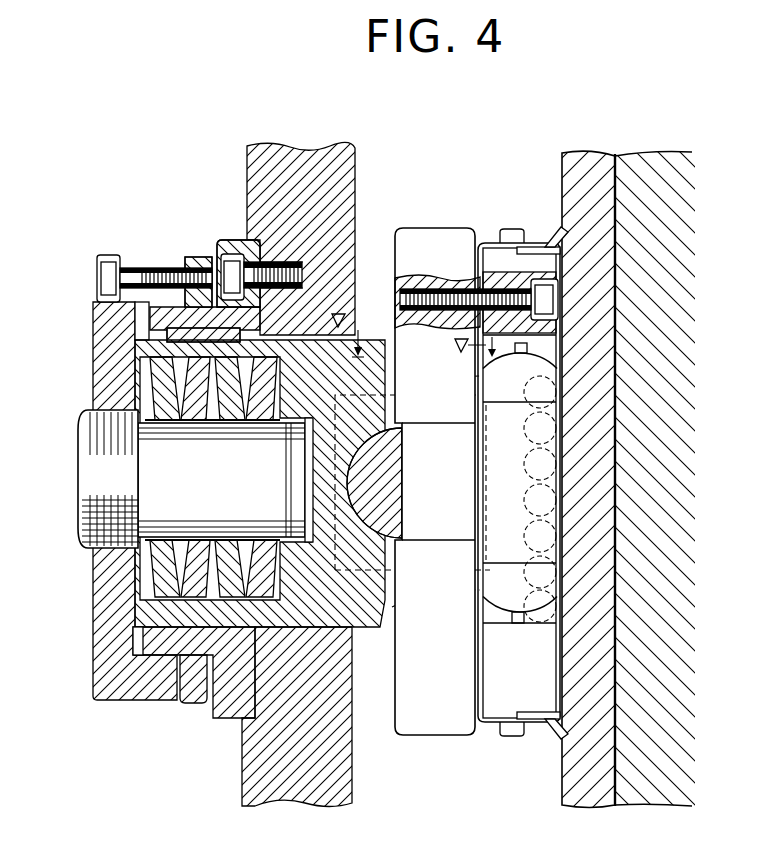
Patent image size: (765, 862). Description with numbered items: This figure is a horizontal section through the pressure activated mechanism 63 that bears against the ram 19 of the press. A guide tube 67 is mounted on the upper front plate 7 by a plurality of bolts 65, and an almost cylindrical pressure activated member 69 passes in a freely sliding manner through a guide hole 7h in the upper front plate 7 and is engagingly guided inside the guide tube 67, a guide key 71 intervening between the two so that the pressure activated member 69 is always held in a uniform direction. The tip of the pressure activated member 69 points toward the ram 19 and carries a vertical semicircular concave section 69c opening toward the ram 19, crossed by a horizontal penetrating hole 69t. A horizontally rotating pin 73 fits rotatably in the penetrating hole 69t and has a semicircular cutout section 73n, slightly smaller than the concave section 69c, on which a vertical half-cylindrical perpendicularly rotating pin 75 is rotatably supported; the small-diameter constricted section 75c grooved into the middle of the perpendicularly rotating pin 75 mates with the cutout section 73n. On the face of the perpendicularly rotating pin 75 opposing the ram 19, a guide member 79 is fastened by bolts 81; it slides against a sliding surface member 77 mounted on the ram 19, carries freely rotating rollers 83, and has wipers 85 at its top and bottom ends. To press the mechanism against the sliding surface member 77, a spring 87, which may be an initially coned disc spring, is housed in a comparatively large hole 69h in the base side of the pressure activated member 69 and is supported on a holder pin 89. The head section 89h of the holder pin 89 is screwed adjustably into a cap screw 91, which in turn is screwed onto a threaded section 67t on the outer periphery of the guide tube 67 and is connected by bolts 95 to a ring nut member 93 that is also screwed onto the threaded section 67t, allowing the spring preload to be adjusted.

The upper front plate 7 is at (348, 226).
The guide hole 7h is at (318, 318).
The ram 19 is at (656, 796).
The pressure activated mechanism 63 is at (101, 241).
The bolts 65 is at (292, 262).
The guide tube 67 is at (228, 710).
The threaded section 67t is at (127, 678).
The pressure activated member 69 is at (328, 384).
The concave section 69c is at (358, 330).
The hole 69h is at (148, 589).
The penetrating hole 69t is at (382, 395).
The guide key 71 is at (262, 333).
The horizontally rotating pin 73 is at (377, 523).
The cutout section 73n is at (397, 460).
The perpendicularly rotating pin 75 is at (446, 689).
The constricted section 75c is at (448, 537).
The sliding surface member 77 is at (598, 796).
The guide member 79 is at (553, 672).
The bolts 81 is at (561, 299).
The rollers 83 is at (558, 398).
The wipers 85 is at (551, 243).
The spring 87 is at (270, 404).
The holder pin 89 is at (216, 484).
The head section 89h is at (132, 484).
The cap screw 91 is at (93, 347).
The ring nut member 93 is at (193, 702).
The bolts 95 is at (157, 272).